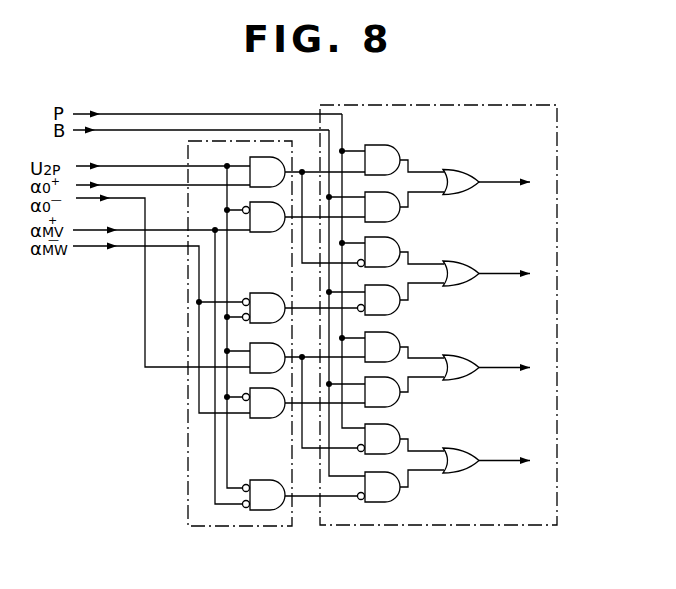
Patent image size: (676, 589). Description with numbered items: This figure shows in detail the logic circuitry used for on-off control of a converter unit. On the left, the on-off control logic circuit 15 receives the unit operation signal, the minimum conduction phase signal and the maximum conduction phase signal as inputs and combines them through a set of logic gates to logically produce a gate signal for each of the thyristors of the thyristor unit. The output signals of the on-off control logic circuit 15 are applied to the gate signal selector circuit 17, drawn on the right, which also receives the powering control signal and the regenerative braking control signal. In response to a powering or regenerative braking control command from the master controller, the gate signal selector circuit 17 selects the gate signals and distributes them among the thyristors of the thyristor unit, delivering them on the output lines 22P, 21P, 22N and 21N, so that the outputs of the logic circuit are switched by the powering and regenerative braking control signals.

The on-off control logic circuit 15 is at (212, 527).
The gate signal selector circuit 17 is at (438, 298).
The output line 22P is at (493, 173).
The output line 21P is at (493, 268).
The output line 22N is at (494, 360).
The output line 21N is at (494, 451).